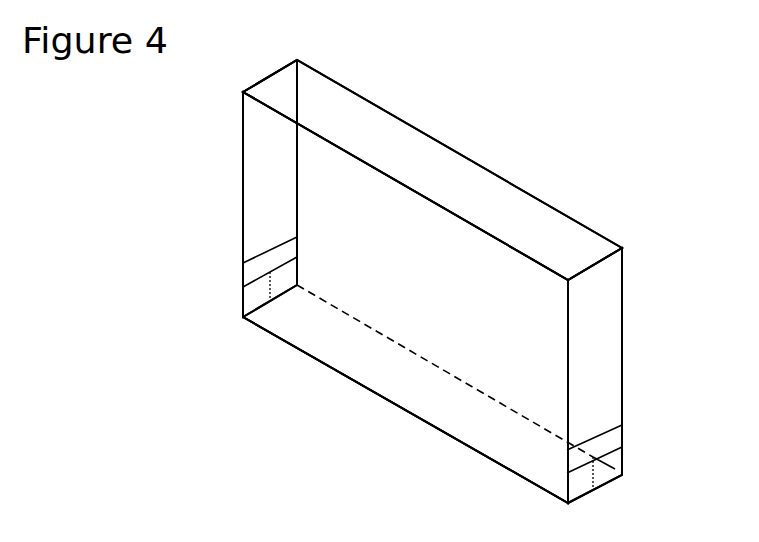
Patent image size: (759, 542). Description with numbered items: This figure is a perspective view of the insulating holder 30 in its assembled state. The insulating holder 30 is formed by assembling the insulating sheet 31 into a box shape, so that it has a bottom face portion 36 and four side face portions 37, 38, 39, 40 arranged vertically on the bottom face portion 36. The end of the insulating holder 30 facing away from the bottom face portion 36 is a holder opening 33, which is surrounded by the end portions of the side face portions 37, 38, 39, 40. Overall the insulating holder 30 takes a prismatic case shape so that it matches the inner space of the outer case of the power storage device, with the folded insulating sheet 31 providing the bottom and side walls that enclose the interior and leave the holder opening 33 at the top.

The insulating holder 30 is at (507, 148).
The insulating sheet 31 is at (603, 317).
The holder opening 33 is at (513, 208).
The bottom face portion 36 is at (432, 392).
The side face portion 37 is at (392, 300).
The side face portion 38 is at (600, 399).
The side face portion 39 is at (367, 262).
The side face portion 40 is at (243, 163).